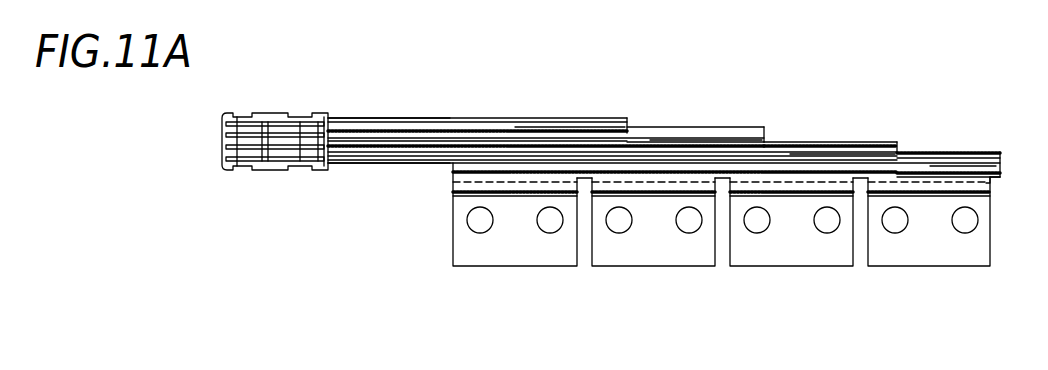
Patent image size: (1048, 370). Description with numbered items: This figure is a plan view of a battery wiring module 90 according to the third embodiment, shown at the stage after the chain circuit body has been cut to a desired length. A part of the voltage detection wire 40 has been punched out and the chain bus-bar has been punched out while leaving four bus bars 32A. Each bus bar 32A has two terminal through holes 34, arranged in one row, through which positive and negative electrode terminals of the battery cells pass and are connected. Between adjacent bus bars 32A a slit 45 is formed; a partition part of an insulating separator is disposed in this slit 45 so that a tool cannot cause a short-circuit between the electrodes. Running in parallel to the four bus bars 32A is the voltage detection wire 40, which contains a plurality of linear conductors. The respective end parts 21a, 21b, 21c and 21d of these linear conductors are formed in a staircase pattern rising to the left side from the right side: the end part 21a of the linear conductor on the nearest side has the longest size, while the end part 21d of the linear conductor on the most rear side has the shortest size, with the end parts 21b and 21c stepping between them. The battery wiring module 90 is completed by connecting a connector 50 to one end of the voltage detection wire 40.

The connector 50 is at (272, 112).
The voltage detection wire 40 is at (418, 118).
The battery wiring module 90 is at (517, 80).
The end part 21d is at (577, 118).
The end part 21c is at (718, 127).
The end part 21b is at (858, 143).
The end part 21a is at (970, 150).
The slit 45 is at (593, 208).
The terminal through hole 34 is at (485, 210).
The bus bar 32A is at (506, 272).